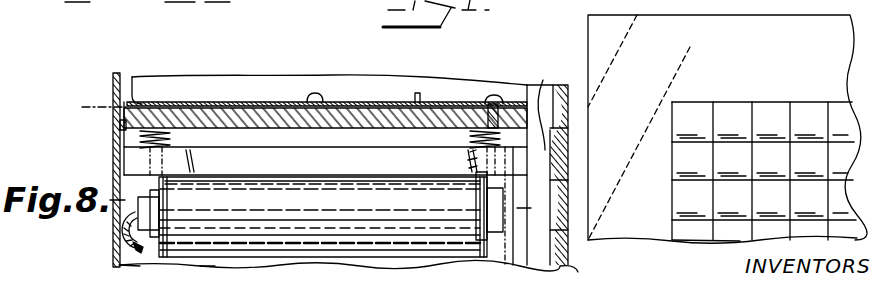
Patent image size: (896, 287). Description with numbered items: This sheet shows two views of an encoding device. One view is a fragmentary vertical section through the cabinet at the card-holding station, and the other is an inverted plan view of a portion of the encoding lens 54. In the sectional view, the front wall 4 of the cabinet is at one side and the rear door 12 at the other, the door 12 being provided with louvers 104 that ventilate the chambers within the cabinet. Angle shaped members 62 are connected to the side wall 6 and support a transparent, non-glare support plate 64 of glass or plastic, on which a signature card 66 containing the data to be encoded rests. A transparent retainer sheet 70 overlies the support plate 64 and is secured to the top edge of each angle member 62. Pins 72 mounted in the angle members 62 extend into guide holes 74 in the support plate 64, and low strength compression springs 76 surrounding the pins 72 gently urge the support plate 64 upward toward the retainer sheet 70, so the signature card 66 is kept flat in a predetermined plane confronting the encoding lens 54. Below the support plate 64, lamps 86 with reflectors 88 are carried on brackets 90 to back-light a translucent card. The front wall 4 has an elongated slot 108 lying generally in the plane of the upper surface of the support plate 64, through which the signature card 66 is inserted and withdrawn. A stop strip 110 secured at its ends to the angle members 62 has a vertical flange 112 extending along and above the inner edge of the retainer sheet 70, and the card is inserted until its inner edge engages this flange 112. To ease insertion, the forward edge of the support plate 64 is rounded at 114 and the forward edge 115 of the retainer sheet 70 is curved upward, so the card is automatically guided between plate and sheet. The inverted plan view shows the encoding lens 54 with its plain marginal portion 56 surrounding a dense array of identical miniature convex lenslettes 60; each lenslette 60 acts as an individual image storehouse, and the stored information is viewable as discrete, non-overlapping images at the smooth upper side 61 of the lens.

In FIG. 8, the front wall 4 is at (116, 137).
In FIG. 8, the side wall 6 is at (308, 85).
In FIG. 8, the rear door 12 is at (577, 267).
In FIG. 8, the encoding lens 54 is at (111, 276).
In FIG. 5, the encoding lens 54 is at (667, 243).
In FIG. 5, the plain marginal portion 56 is at (640, 93).
In FIG. 5, the miniature convex lenslette 60 is at (803, 107).
In FIG. 8, the upper side of the lens 61 is at (203, 286).
In FIG. 8, the angle shaped member 62 is at (208, 167).
In FIG. 8, the support plate 64 is at (292, 126).
In FIG. 8, the signature card 66 is at (100, 106).
In FIG. 8, the retainer sheet 70 is at (223, 100).
In FIG. 8, the pin 72 is at (471, 206).
In FIG. 8, the guide hole 74 is at (477, 105).
In FIG. 8, the compression spring 76 is at (140, 141).
In FIG. 8, the lamp 86 is at (368, 183).
In FIG. 8, the reflector 88 is at (457, 255).
In FIG. 8, the bracket 90 is at (110, 208).
In FIG. 8, the louver 104 is at (543, 97).
In FIG. 8, the elongated slot 108 is at (113, 100).
In FIG. 8, the stop strip 110 is at (453, 100).
In FIG. 8, the vertical flange 112 is at (423, 100).
In FIG. 8, the rounded forward edge 114 is at (118, 125).
In FIG. 8, the forward edge of the retainer sheet 115 is at (133, 90).